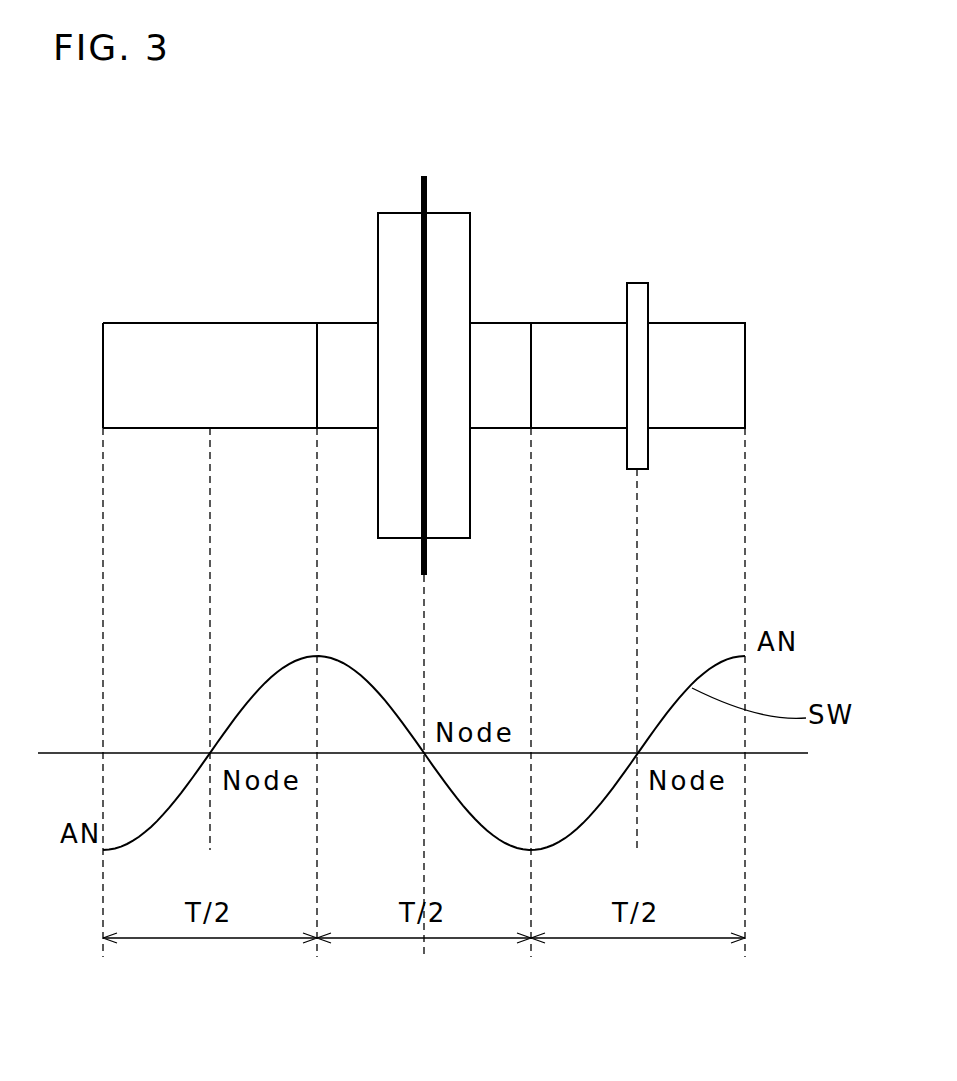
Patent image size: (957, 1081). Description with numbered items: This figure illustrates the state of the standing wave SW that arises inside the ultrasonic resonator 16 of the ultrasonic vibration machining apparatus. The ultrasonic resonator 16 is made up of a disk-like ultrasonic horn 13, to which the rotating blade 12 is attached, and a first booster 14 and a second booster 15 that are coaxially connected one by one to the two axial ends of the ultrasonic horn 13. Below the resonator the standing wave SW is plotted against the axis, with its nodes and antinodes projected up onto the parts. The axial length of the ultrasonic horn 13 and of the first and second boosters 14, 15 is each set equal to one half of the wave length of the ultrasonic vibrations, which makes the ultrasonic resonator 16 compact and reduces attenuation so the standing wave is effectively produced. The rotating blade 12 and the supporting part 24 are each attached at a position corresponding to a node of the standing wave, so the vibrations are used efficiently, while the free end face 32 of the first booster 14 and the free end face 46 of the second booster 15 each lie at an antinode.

The rotating blade 12 is at (425, 176).
The ultrasonic horn 13 is at (487, 212).
The first booster 14 is at (710, 330).
The second booster 15 is at (133, 333).
The ultrasonic resonator 16 is at (773, 403).
The supporting part 24 is at (637, 290).
The free end face 32 is at (745, 358).
The free end face 46 is at (103, 358).